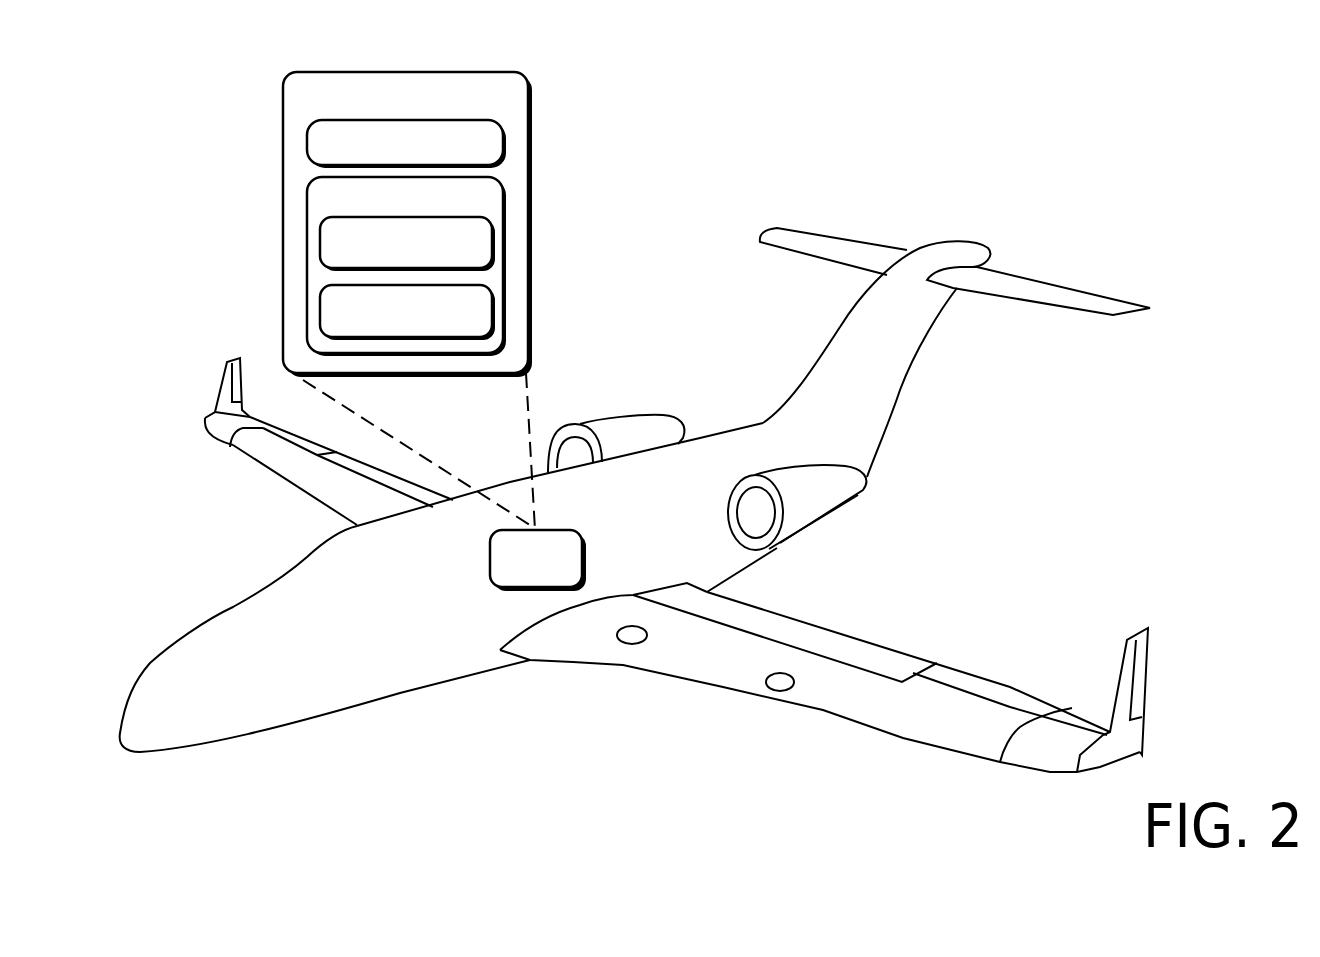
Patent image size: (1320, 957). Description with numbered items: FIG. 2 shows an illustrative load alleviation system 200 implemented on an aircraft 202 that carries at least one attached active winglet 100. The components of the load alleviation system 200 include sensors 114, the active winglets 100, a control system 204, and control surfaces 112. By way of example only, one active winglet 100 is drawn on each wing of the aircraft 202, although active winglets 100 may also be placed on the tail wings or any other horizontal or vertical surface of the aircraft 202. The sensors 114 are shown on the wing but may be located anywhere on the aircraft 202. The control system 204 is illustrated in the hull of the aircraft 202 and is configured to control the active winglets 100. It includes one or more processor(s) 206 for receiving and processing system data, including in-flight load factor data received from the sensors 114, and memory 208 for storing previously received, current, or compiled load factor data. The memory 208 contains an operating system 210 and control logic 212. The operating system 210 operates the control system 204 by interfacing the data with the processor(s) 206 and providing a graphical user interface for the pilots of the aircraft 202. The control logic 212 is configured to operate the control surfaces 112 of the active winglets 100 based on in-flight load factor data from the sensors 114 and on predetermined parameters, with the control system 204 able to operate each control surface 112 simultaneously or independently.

The active winglet 100 is at (664, 570).
The control surface 112 is at (727, 565).
The sensor 114 is at (716, 666).
The load alleviation system 200 is at (783, 224).
The aircraft 202 is at (635, 510).
The control system 204 is at (552, 568).
The processor(s) 206 is at (487, 152).
The memory 208 is at (460, 206).
The operating system 210 is at (458, 264).
The control logic 212 is at (418, 330).